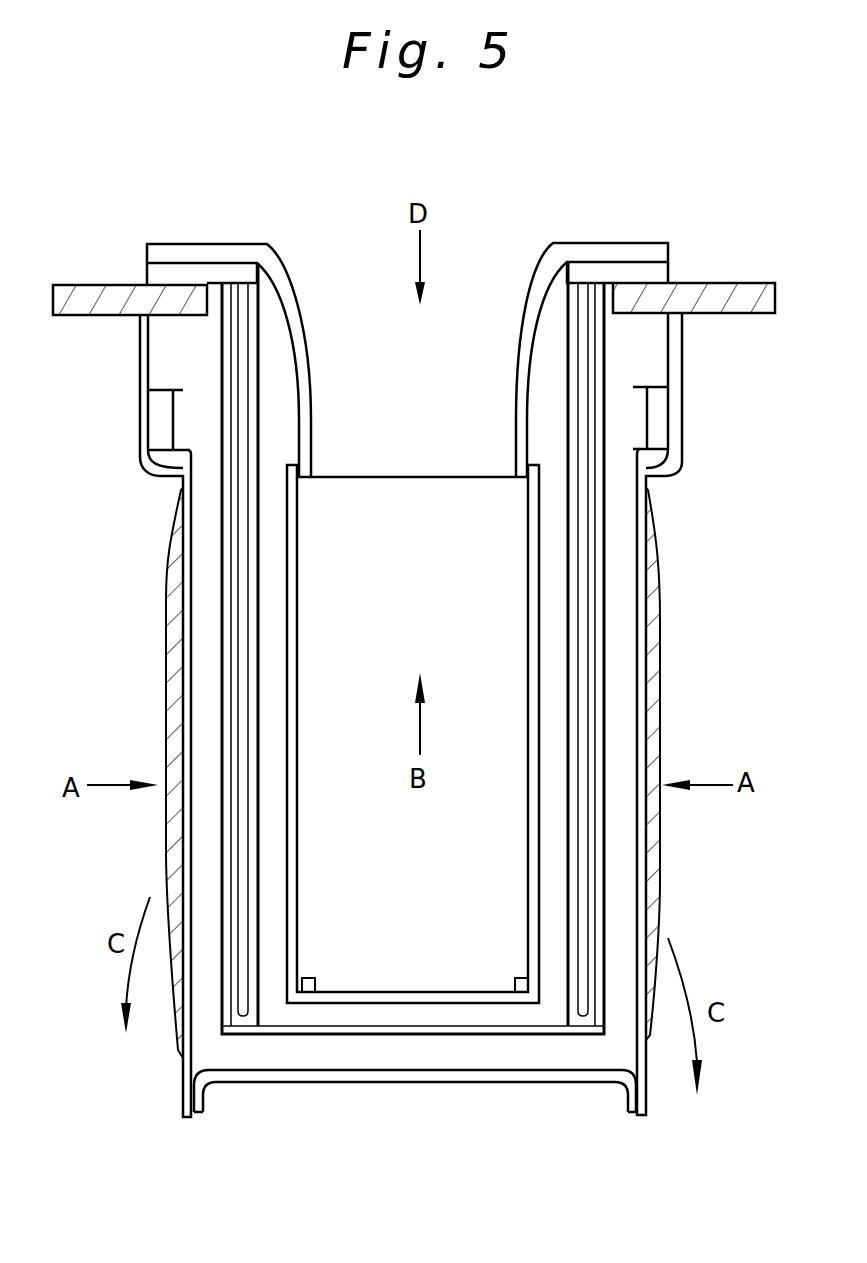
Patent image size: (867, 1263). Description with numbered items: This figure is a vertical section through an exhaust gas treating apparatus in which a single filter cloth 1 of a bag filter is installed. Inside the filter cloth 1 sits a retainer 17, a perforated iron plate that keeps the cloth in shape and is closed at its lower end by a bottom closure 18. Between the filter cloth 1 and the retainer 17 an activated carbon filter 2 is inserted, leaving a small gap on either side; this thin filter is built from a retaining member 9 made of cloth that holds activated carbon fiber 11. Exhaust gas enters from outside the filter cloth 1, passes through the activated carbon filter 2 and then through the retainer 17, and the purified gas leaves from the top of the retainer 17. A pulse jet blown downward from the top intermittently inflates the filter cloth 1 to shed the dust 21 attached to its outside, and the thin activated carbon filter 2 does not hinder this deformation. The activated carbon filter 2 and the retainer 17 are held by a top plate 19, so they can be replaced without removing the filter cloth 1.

The filter cloth 1 is at (637, 598).
The activated carbon filter 2 is at (470, 648).
The retaining member 9 is at (602, 685).
The activated carbon fiber 11 is at (588, 733).
The retainer 17 is at (513, 392).
The bottom closure 18 is at (435, 1035).
The top plate 19 is at (747, 317).
The dust 21 is at (168, 675).